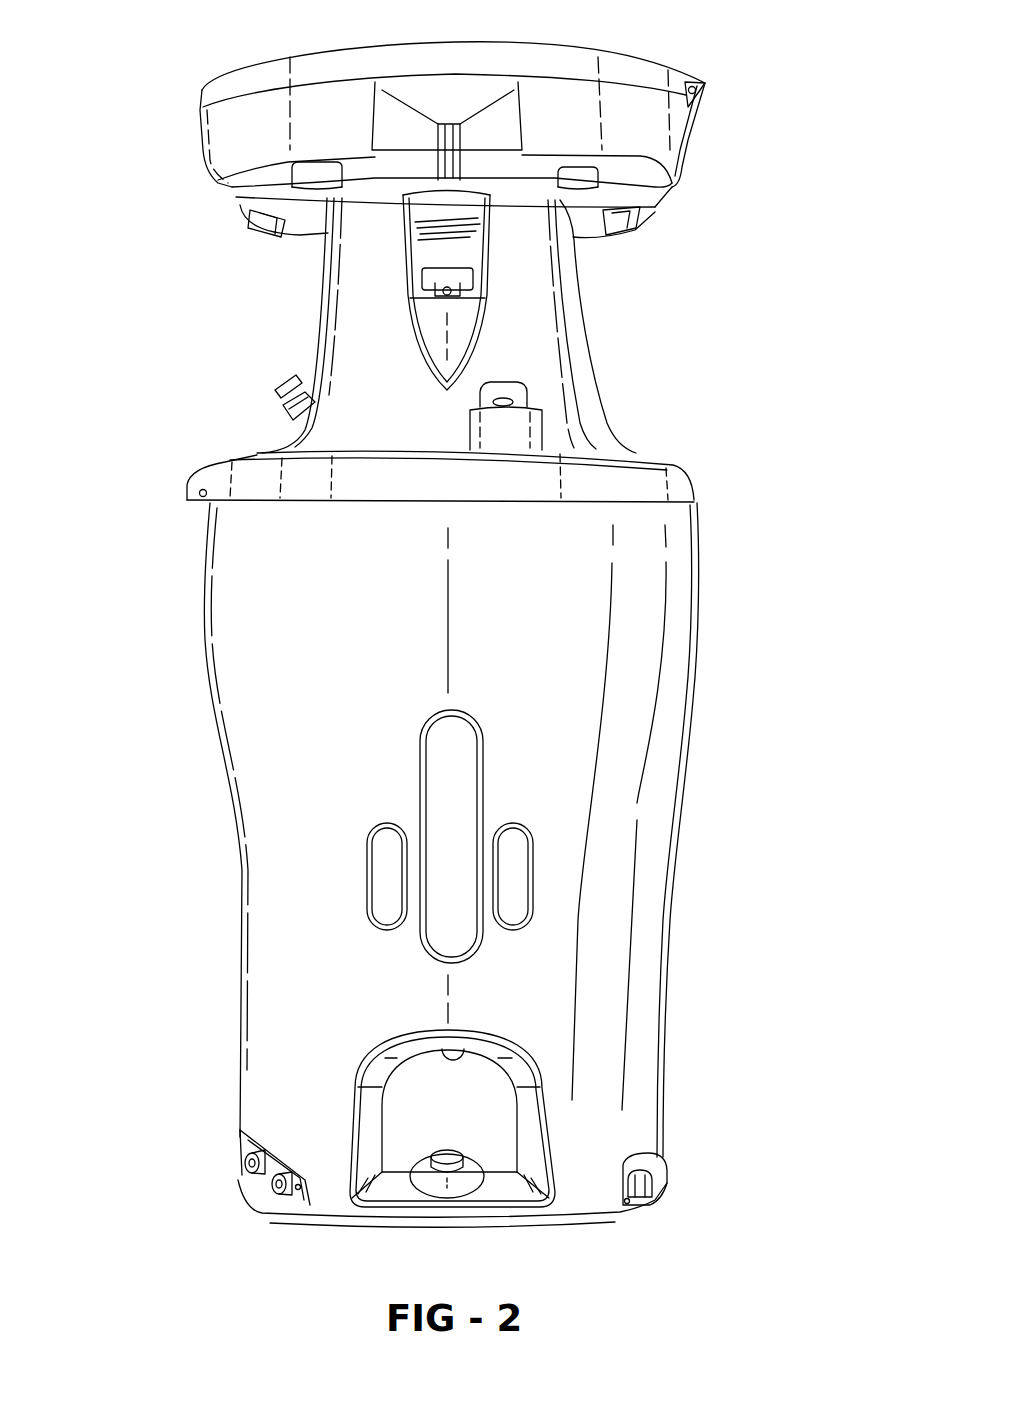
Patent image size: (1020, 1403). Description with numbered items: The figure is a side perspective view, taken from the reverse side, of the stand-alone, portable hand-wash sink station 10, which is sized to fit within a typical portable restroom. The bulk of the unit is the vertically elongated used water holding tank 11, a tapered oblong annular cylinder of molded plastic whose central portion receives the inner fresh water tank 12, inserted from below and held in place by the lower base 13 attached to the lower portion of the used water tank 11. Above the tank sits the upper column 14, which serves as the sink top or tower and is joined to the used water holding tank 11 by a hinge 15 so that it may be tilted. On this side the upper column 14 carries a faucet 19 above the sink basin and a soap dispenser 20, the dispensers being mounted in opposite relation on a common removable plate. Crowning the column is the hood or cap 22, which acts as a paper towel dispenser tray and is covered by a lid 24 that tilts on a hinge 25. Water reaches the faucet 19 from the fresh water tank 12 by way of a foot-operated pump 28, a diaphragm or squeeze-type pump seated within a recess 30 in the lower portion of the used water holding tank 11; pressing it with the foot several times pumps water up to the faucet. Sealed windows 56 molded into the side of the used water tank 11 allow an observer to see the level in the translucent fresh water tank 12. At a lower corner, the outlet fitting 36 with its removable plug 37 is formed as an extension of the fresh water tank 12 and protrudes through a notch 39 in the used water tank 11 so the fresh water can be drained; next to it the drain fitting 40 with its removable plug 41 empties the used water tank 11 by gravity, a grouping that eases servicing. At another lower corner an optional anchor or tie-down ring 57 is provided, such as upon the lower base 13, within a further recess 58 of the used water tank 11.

The hand-wash sink station 10 is at (748, 63).
The used water holding tank 11 is at (678, 752).
The fresh water tank 12 is at (513, 877).
The lower base 13 is at (603, 1232).
The upper column 14 is at (585, 392).
The hinge 15 is at (186, 492).
The faucet 19 is at (511, 392).
The soap dispenser 20 is at (432, 260).
The hood or cap 22 is at (687, 147).
The lid 24 is at (652, 60).
The hinge 25 is at (702, 90).
The foot-operated pump 28 is at (472, 1158).
The recess 30 is at (515, 1105).
The outlet fitting 36 is at (298, 1187).
The removable plug 37 is at (272, 1182).
The notch 39 is at (290, 1207).
The drain fitting 40 is at (245, 1135).
The removable plug 41 is at (242, 1167).
The window 56 is at (533, 903).
The anchor or tie-down ring 57 is at (650, 1183).
The recess 58 is at (648, 1165).